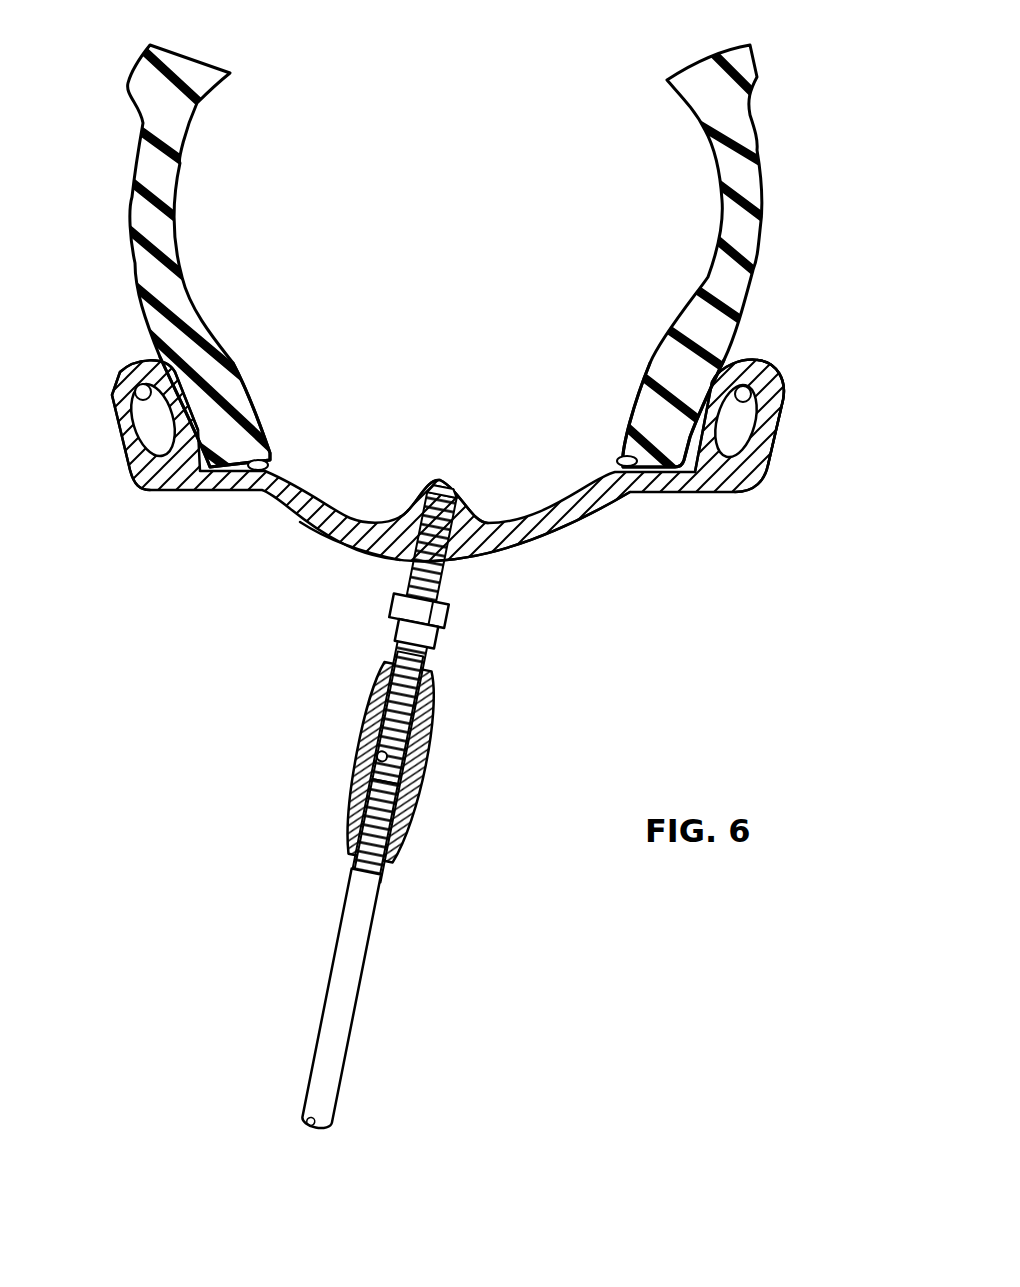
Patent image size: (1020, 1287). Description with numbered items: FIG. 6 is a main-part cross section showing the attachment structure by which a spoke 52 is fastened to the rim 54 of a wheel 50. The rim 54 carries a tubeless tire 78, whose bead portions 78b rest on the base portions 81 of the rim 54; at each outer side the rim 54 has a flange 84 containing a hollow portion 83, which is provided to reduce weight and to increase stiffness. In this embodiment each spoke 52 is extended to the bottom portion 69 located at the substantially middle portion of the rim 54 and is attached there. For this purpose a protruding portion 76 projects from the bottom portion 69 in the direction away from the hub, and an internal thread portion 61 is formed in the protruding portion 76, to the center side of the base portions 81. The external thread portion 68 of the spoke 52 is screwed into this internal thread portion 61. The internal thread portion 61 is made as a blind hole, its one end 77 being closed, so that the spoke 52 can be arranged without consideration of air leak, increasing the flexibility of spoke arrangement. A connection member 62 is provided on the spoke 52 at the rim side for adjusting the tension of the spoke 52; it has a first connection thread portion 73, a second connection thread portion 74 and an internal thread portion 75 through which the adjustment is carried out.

The wheel rim assembly 50 is at (815, 350).
The spoke 52 is at (320, 985).
The rim 54 is at (297, 530).
The internal thread portion 61 is at (407, 543).
The connection member 62 is at (427, 753).
The external thread portion 68 is at (460, 553).
The bottom portion 69 is at (350, 547).
The first connection thread portion 73 is at (350, 812).
The second connection thread portion 74 is at (373, 693).
The internal thread portion 75 is at (367, 757).
The protruding portion 76 is at (443, 483).
The one end 77 is at (437, 480).
The tubeless tire 78 is at (205, 80).
The bead portion 78b is at (227, 440).
The base portion 81 is at (273, 460).
The hollow portion 83 is at (123, 380).
The flange 84 is at (120, 443).